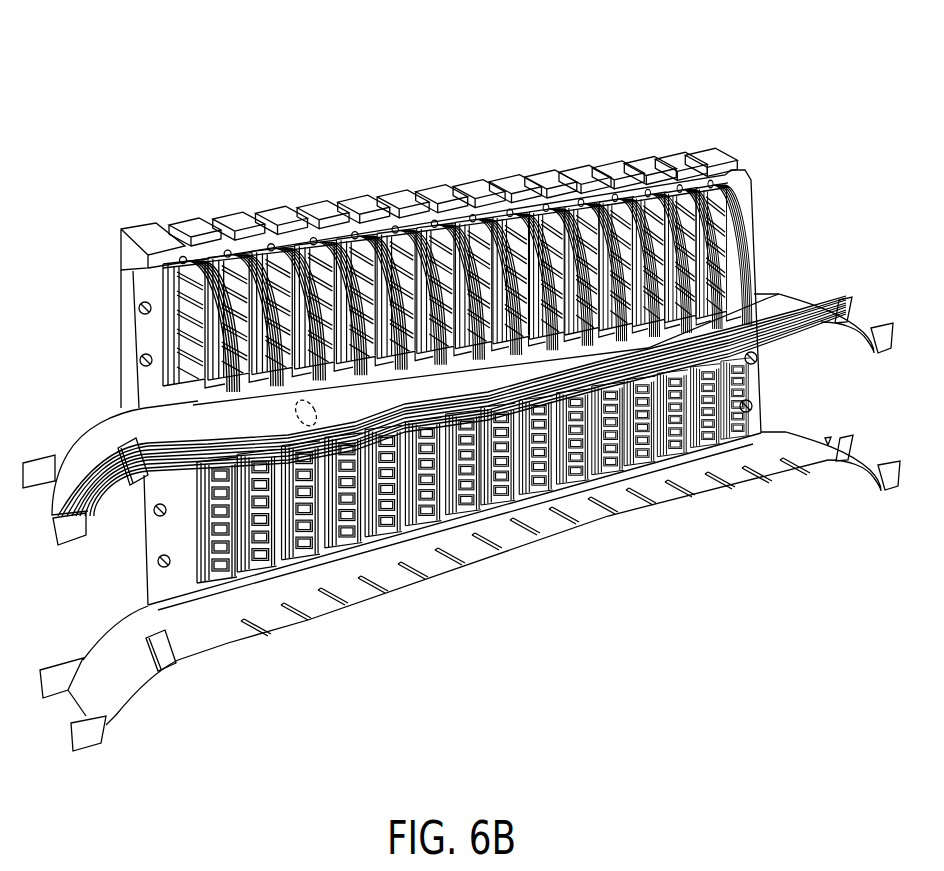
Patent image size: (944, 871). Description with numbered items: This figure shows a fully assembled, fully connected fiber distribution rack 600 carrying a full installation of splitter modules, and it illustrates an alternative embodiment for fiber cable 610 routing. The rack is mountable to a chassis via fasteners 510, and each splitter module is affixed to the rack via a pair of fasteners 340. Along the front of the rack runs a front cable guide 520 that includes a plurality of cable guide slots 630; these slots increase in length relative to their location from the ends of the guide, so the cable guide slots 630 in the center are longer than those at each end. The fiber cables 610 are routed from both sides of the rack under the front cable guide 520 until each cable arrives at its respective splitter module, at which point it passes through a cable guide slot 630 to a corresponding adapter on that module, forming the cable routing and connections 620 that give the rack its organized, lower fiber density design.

The fiber distribution rack 600 is at (306, 66).
The fasteners 340 is at (205, 216).
The connections 620 is at (160, 212).
The fasteners 510 is at (127, 349).
The front cable guide 520 is at (110, 632).
The fiber cable 610 is at (140, 483).
The cable guide slots 630 is at (367, 533).